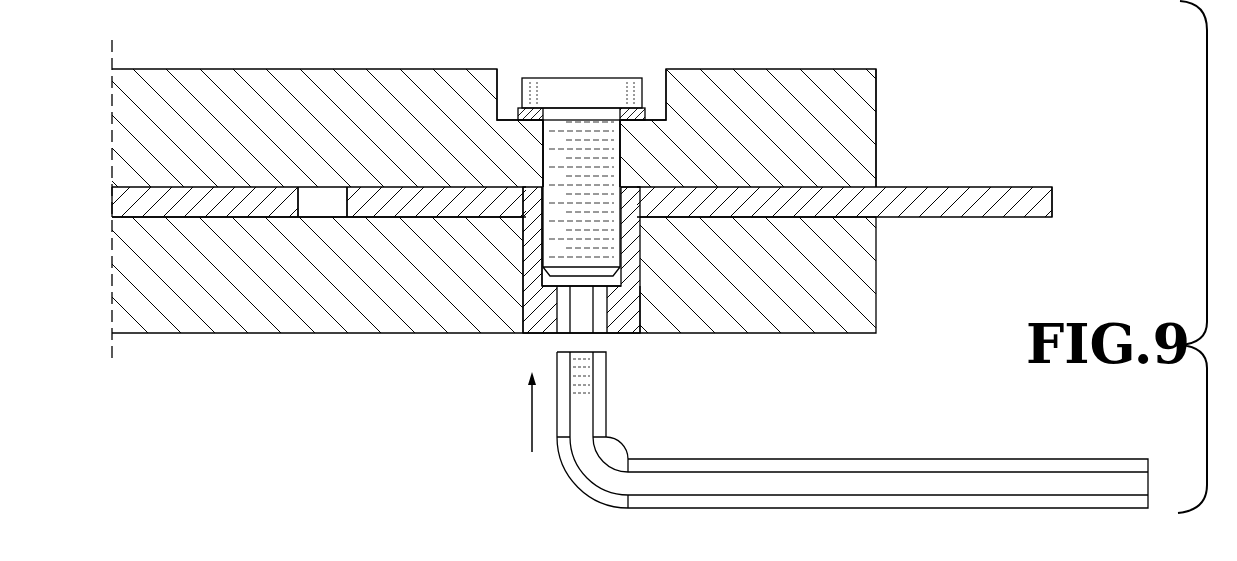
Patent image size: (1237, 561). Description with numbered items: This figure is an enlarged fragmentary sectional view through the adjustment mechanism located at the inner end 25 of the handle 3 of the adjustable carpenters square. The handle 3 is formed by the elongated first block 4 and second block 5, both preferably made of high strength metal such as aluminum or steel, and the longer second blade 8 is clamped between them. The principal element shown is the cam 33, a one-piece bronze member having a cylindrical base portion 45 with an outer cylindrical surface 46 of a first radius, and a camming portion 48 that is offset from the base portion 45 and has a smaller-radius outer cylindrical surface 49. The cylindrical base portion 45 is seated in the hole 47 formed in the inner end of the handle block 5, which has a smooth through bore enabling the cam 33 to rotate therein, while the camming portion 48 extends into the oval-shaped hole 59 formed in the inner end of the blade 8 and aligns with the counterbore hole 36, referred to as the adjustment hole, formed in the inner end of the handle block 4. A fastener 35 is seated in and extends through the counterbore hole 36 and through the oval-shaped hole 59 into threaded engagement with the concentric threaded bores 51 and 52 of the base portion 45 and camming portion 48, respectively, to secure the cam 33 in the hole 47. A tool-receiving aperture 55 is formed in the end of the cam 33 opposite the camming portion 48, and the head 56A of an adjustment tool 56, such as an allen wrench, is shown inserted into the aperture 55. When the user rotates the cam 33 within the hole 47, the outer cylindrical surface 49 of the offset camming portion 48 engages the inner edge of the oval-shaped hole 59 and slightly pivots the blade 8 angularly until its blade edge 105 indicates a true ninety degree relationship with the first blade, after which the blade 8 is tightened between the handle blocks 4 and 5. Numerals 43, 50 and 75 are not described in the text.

The handle 3 is at (161, 348).
The first block 4 is at (386, 71).
The second block 5 is at (322, 336).
The second blade 8 is at (1010, 184).
The inner end 25 is at (877, 127).
The cam 33 is at (597, 260).
The fastener 35 is at (573, 91).
The counterbore hole 36 is at (497, 87).
The washer 43 is at (518, 114).
The cylindrical base portion 45 is at (597, 260).
The outer cylindrical surface 46 is at (597, 260).
The hole 47 is at (650, 312).
The camming portion 48 is at (453, 260).
The outer cylindrical surface 49 is at (526, 203).
The sleeve upper end 50 is at (637, 197).
The threaded bore 51 is at (546, 256).
The threaded bore 52 is at (545, 195).
The tool-receiving aperture 55 is at (578, 318).
The adjustment tool 56 is at (852, 430).
The head 56A is at (588, 393).
The oval-shaped hole 59 is at (618, 195).
The joint gap 75 is at (328, 197).
The blade edge 105 is at (1053, 193).